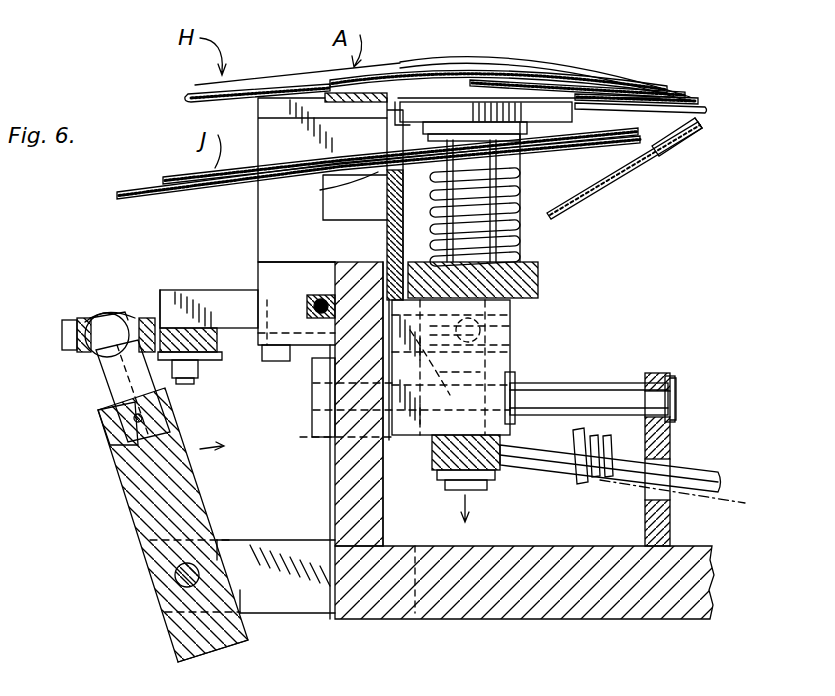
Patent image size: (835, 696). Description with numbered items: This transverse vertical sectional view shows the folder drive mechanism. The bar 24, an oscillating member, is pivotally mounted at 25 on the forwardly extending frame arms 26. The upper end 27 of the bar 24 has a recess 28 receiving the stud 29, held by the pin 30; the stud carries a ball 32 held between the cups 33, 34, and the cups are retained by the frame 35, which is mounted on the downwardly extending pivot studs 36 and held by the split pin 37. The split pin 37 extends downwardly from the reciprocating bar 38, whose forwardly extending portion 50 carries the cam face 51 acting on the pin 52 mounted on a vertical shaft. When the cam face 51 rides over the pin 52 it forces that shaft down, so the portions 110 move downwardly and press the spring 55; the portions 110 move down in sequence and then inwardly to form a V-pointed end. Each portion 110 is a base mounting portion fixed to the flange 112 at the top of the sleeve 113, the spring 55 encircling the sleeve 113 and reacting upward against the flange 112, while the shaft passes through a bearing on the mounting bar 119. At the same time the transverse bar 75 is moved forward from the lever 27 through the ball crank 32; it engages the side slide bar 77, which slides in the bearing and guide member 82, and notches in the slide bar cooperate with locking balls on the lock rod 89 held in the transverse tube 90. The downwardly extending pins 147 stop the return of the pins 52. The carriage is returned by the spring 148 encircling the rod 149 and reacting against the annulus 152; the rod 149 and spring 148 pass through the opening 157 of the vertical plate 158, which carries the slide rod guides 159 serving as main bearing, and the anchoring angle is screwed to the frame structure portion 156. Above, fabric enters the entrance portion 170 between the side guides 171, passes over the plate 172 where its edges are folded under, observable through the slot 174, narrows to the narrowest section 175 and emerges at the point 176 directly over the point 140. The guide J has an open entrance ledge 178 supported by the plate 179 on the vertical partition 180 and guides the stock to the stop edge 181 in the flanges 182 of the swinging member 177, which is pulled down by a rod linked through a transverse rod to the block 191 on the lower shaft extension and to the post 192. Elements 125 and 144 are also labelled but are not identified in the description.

The bar 24 is at (170, 628).
The pivot mounting 25 is at (198, 563).
The forwardly extending frame arms 26 is at (315, 608).
The upper end 27 is at (130, 518).
The recess 28 is at (120, 440).
The stud 29 is at (138, 422).
The pin 30 is at (118, 378).
The ball 32 is at (118, 315).
The cup 33 is at (82, 350).
The cup 34 is at (145, 315).
The frame 35 is at (64, 332).
The pivot studs 36 is at (190, 384).
The split pin 37 is at (200, 371).
The reciprocating bar 38 is at (158, 300).
The forwardly extending portion 50 is at (500, 312).
The cam face 51 is at (451, 367).
The pin 52 is at (508, 328).
The spring 55 is at (520, 158).
The transverse bar 75 is at (190, 335).
The side slide bar 77 is at (256, 296).
The bearing and guide member 82 is at (302, 350).
The lock rod 89 is at (322, 296).
The transverse tube 90 is at (308, 308).
The base mounting portion 110 is at (422, 110).
The flange 112 is at (425, 128).
The sleeve 113 is at (490, 198).
The mounting bar 119 is at (258, 262).
The thin plate 125 is at (710, 108).
The point 140 is at (712, 85).
The shaft 144 is at (508, 346).
The downwardly extending pins 147 is at (589, 358).
The spring 148 is at (608, 490).
The rod 149 is at (736, 480).
The annulus 152 is at (575, 482).
The frame structure portion 156 is at (672, 612).
The opening 157 is at (673, 450).
The vertical plate 158 is at (672, 432).
The slide rod guides 159 is at (618, 393).
The entrance portion 170 is at (272, 86).
The side guides 171 is at (200, 85).
The plate 172 is at (490, 68).
The slot 174 is at (547, 82).
The narrowest section 175 is at (630, 87).
The point 176 is at (670, 93).
The swinging member 177 is at (640, 170).
The open entrance ledge 178 is at (137, 192).
The plate 179 is at (326, 187).
The vertical partition 180 is at (355, 197).
The stop edge 181 is at (700, 120).
The flanges 182 is at (678, 150).
The block 191 is at (432, 470).
The post 192 is at (355, 468).